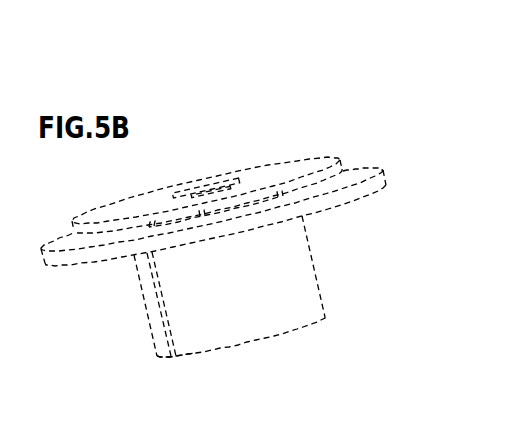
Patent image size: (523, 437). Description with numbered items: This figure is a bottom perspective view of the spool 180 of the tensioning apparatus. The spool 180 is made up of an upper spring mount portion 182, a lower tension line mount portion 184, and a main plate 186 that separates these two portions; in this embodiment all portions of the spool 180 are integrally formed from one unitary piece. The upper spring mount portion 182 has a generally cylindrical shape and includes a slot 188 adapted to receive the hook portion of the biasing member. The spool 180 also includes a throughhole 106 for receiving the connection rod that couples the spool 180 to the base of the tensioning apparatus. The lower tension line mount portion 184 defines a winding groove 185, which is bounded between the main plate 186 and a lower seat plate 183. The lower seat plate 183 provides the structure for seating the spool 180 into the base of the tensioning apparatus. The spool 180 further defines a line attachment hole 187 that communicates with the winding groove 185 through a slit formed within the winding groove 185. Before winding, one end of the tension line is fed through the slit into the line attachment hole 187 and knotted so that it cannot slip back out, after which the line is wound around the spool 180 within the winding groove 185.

The throughhole 106 is at (202, 187).
The line attachment hole 187 is at (213, 192).
The lower seat plate 183 is at (297, 183).
The lower tension line mount portion 184 is at (350, 159).
The main plate 186 is at (393, 172).
The winding groove 185 is at (103, 234).
The spool 180 is at (323, 259).
The upper spring mount portion 182 is at (128, 307).
The slot 188 is at (168, 333).